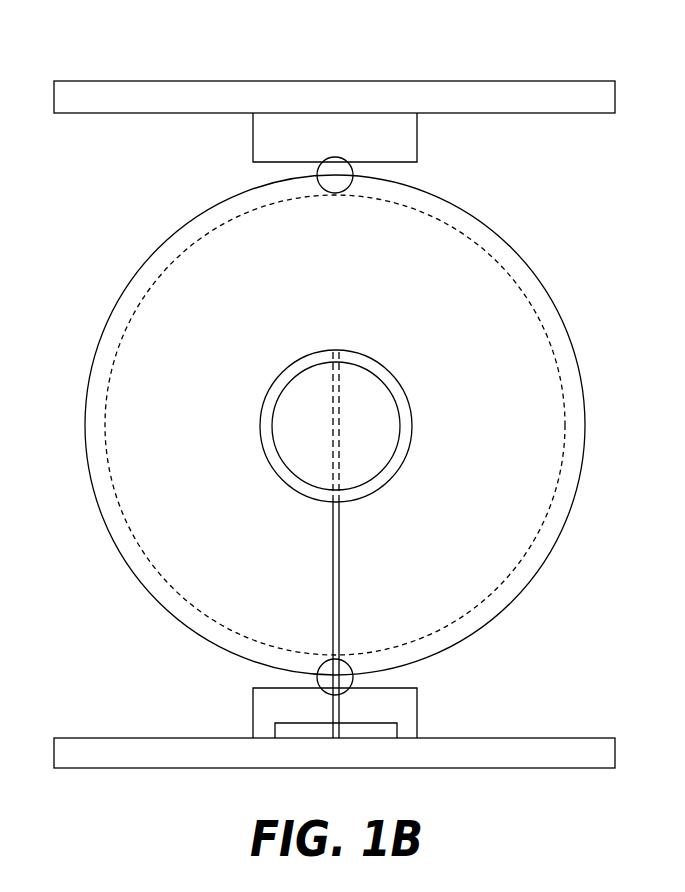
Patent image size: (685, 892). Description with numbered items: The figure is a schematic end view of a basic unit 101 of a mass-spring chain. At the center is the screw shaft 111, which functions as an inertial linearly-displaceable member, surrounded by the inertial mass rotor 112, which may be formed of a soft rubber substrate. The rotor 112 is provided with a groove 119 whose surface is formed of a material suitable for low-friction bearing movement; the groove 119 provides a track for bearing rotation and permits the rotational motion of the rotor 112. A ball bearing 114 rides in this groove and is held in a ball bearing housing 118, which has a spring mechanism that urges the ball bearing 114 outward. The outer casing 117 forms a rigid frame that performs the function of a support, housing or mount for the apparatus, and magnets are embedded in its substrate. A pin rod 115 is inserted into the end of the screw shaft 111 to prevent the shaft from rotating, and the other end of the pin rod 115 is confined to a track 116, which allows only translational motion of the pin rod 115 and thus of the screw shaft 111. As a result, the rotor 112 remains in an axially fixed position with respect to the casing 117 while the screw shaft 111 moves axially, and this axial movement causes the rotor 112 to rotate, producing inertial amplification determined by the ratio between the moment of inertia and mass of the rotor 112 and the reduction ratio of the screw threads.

The basic unit 101 is at (624, 174).
The screw shaft 111 is at (285, 368).
The inertial mass rotor 112 is at (163, 244).
The ball bearing 114 is at (355, 170).
The pin rod 115 is at (333, 568).
The track 116 is at (275, 723).
The outer casing 117 is at (173, 81).
The ball bearing housing 118 is at (253, 135).
The groove 119 is at (540, 298).